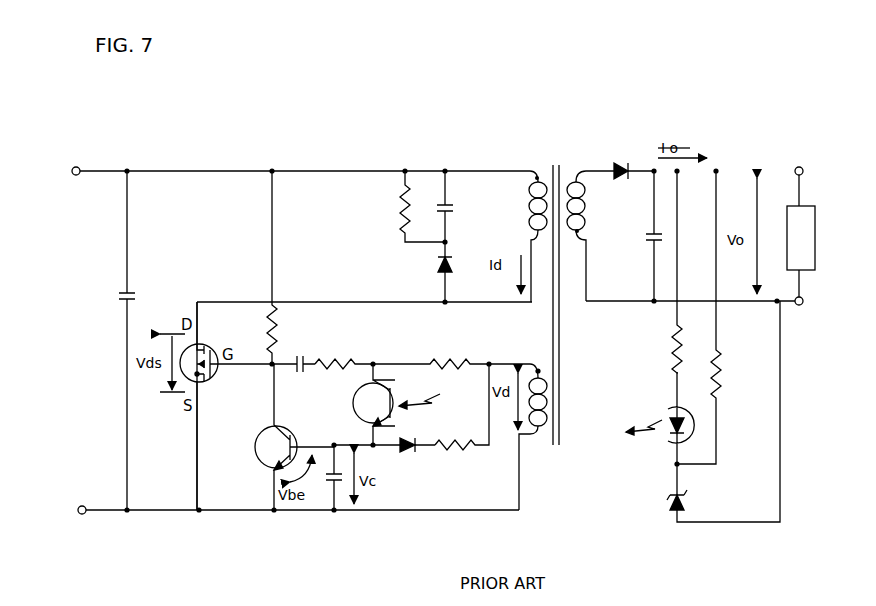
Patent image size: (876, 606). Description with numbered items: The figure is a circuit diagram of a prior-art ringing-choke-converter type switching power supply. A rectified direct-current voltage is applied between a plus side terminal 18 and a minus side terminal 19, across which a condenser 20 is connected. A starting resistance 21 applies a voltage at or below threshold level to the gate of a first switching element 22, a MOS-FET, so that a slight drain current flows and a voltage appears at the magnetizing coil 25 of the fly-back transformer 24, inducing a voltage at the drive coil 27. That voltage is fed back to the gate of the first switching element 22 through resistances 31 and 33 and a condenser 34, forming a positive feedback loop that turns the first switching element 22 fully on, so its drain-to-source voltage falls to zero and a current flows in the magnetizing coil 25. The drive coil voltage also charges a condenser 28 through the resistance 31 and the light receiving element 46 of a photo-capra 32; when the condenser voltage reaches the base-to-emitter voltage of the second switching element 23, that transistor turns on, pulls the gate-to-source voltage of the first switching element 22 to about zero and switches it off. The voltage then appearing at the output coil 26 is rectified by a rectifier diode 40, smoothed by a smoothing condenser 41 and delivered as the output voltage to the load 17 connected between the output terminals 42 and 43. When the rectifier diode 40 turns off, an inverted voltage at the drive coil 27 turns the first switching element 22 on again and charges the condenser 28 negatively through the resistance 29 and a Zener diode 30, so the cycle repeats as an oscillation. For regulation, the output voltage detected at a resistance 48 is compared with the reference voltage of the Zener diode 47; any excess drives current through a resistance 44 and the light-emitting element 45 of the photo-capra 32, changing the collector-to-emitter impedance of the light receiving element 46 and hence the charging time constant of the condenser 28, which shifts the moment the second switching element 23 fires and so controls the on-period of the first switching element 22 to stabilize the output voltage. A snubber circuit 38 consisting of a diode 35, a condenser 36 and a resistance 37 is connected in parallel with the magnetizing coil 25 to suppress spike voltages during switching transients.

The load 17 is at (813, 236).
The plus side terminal 18 is at (72, 171).
The minus side terminal 19 is at (78, 510).
The input capacitor 20 is at (119, 296).
The starting resistor 21 is at (277, 320).
The first switching element 22 is at (204, 344).
The second switching element 23 is at (262, 433).
The fly-back transformer 24 is at (553, 165).
The magnetizing coil 25 is at (529, 200).
The output coil 26 is at (585, 196).
The drive coil 27 is at (538, 432).
The condenser 28 is at (329, 488).
The resistance 29 is at (455, 454).
The Zener diode 30 is at (412, 453).
The resistance 31 is at (450, 357).
The photo-capra 32 is at (383, 380).
The resistance 33 is at (339, 357).
The condenser 34 is at (301, 372).
The diode 35 is at (438, 265).
The condenser 36 is at (450, 210).
The resistance 37 is at (401, 212).
The snubber circuit 38 is at (381, 245).
The rectifier diode 40 is at (624, 164).
The smoothing condenser 41 is at (646, 239).
The output terminal 42 is at (800, 166).
The output terminal 43 is at (799, 305).
The resistor 44 is at (672, 349).
The light-emitting element 45 is at (672, 408).
The light receiving element 46 is at (354, 405).
The Zener diode 47 is at (671, 497).
The resistance 48 is at (723, 374).